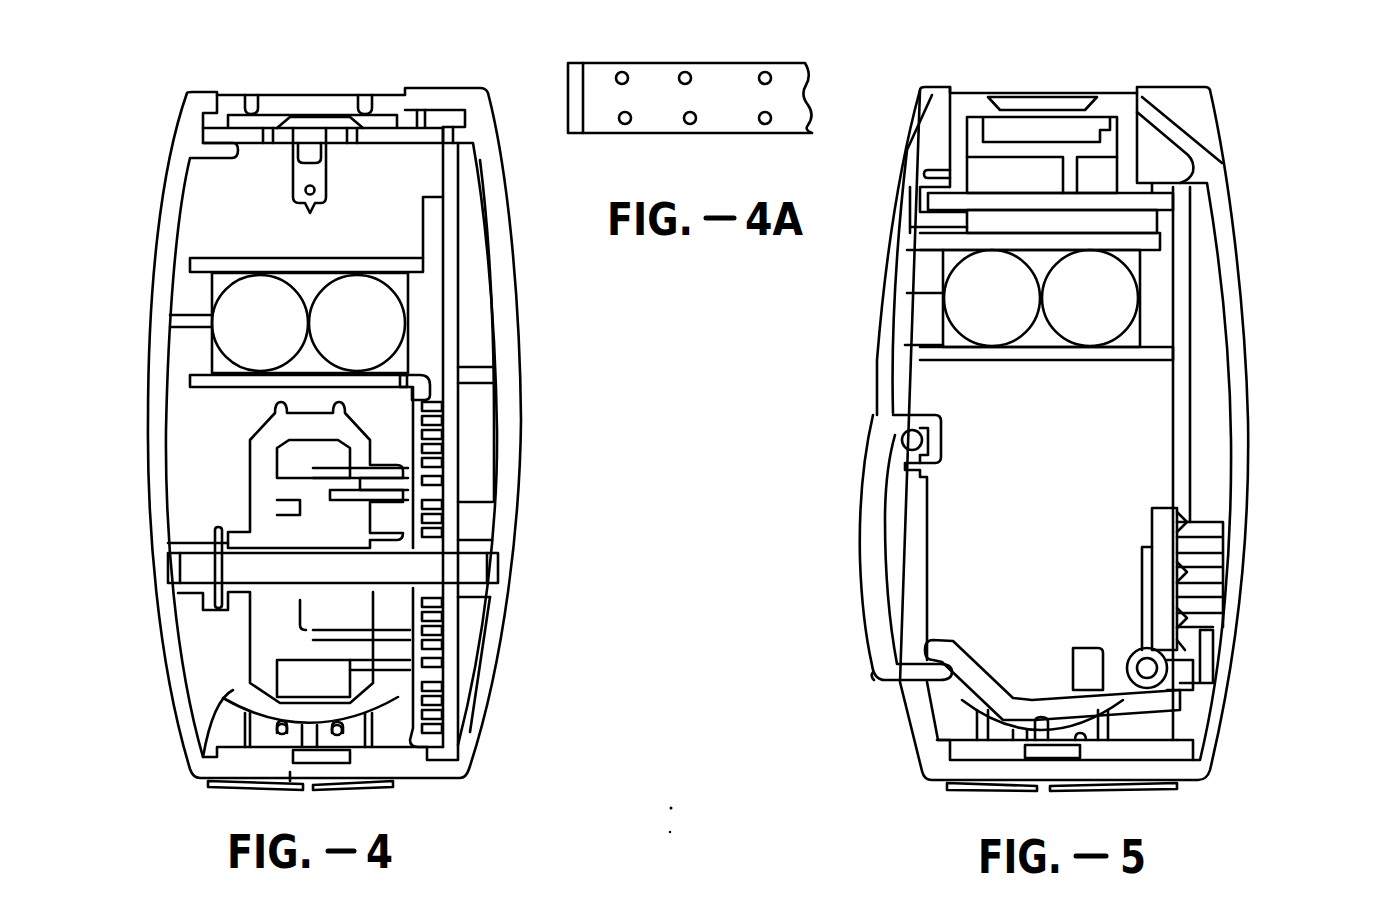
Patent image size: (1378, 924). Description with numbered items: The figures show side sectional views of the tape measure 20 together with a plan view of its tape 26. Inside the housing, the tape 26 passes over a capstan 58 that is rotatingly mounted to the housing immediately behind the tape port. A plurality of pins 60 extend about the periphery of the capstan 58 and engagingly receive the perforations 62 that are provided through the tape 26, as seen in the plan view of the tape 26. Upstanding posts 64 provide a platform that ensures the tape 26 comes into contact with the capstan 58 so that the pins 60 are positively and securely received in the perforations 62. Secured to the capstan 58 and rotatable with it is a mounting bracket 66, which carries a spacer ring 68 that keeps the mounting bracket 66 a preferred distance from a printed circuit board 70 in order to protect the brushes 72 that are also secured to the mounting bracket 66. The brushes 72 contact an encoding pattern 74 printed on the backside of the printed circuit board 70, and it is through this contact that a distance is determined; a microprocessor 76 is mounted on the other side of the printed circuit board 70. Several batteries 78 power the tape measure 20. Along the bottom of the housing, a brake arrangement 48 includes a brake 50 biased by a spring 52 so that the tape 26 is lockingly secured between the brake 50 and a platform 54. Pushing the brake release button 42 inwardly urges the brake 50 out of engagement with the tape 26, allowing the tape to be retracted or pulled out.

In FIG. 4, the tape measure 20 is at (372, 70).
In FIG. 5, the tape measure 20 is at (1250, 74).
In FIG. 4, the tape 26 is at (235, 700).
In FIG. 4A, the tape 26 is at (567, 72).
In FIG. 5, the tape 26 is at (1105, 714).
In FIG. 5, the brake release button 42 is at (870, 530).
In FIG. 5, the brake arrangement 48 is at (845, 628).
In FIG. 5, the brake 50 is at (973, 675).
In FIG. 5, the spring 52 is at (1140, 560).
In FIG. 5, the platform 54 is at (1087, 744).
In FIG. 4, the capstan 58 is at (262, 457).
In FIG. 4, the pins 60 is at (265, 775).
In FIG. 4, the perforations 62 is at (277, 735).
In FIG. 4A, the perforations 62 is at (681, 74).
In FIG. 4, the upstanding posts 64 is at (255, 717).
In FIG. 4, the mounting bracket 66 is at (410, 378).
In FIG. 4, the spacer ring 68 is at (455, 398).
In FIG. 4, the printed circuit board 70 is at (465, 193).
In FIG. 4, the brushes 72 is at (440, 715).
In FIG. 4, the encoding pattern 74 is at (440, 496).
In FIG. 4, the microprocessor 76 is at (486, 445).
In FIG. 4, the batteries 78 is at (288, 315).